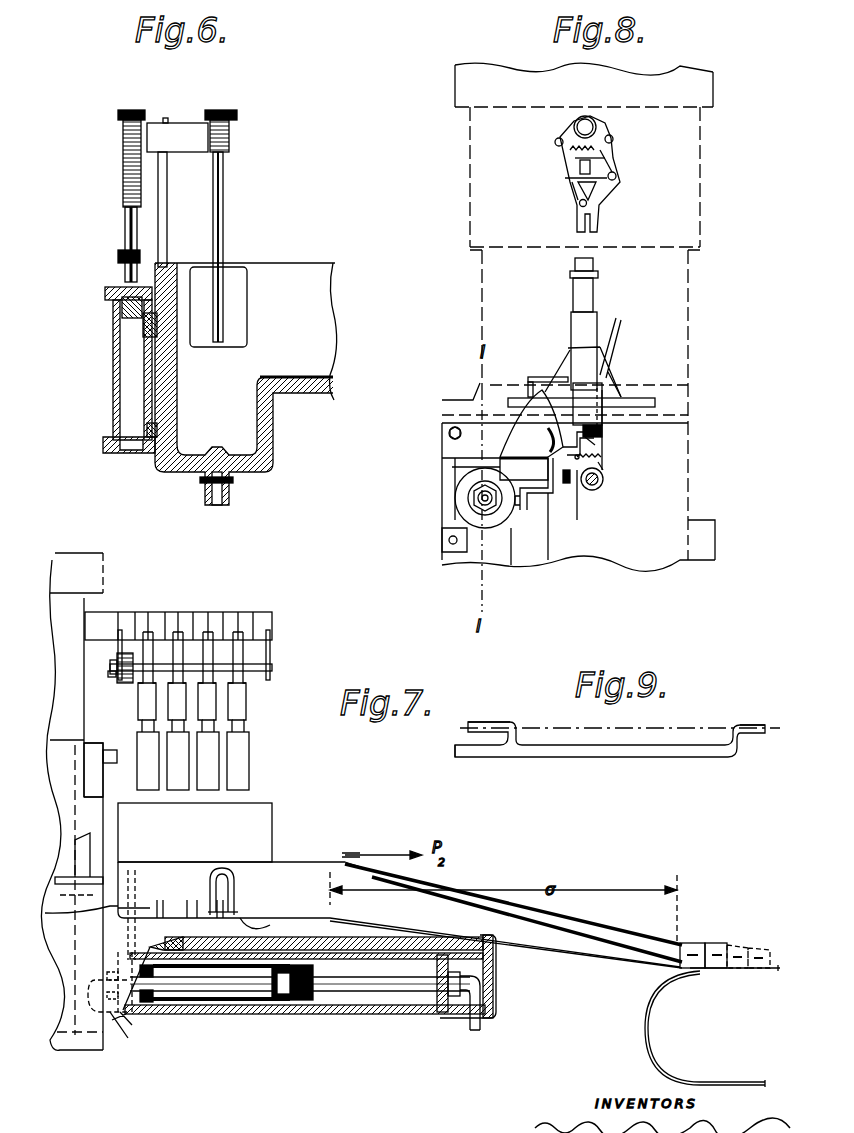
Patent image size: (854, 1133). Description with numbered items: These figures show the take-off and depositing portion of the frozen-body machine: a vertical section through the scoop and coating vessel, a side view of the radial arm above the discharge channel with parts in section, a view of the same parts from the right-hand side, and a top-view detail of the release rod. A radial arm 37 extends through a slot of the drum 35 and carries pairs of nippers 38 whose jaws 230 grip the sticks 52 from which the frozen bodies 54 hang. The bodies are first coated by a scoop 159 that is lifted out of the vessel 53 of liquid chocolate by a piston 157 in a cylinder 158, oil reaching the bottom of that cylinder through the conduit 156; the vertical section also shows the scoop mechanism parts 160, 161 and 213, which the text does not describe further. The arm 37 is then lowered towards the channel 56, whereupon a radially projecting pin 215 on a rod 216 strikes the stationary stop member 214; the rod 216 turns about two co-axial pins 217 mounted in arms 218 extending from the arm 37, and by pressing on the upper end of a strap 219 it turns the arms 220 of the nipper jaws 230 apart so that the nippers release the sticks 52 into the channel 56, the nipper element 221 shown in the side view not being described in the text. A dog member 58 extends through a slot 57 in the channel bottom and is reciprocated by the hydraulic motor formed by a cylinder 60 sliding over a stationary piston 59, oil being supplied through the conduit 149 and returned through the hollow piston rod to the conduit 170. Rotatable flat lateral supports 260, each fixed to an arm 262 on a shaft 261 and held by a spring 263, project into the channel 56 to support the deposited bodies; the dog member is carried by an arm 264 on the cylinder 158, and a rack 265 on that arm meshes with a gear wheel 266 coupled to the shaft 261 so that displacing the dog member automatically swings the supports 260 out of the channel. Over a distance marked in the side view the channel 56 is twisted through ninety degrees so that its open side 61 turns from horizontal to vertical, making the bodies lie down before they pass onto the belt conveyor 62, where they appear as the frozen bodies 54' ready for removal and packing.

In FIG. 8, the drum 35 is at (485, 298).
In FIG. 8, the radial arm 37 is at (585, 125).
In FIG. 7, the radial arm 37 is at (232, 612).
In FIG. 8, the nippers 38 is at (572, 187).
In FIG. 7, the nippers 38 is at (246, 702).
In FIG. 7, the sticks 52 is at (246, 726).
In FIG. 6, the vessel 53 is at (305, 328).
In FIG. 7, the frozen bodies 54 is at (228, 761).
In FIG. 7, the frozen bodies on conveyor 54' is at (730, 941).
In FIG. 8, the channel 56 is at (512, 440).
In FIG. 7, the channel 56 is at (278, 868).
In FIG. 8, the slot 57 is at (600, 446).
In FIG. 8, the dog member 58 is at (605, 433).
In FIG. 7, the dog member 58 is at (110, 907).
In FIG. 7, the piston 59 is at (284, 1003).
In FIG. 8, the cylinder 60 is at (458, 504).
In FIG. 7, the cylinder 60 is at (212, 1003).
In FIG. 7, the open side of the channel 61 is at (598, 925).
In FIG. 7, the belt conveyor 62 is at (652, 1028).
In FIG. 7, the conduit 149 is at (470, 1030).
In FIG. 6, the conduit 156 is at (130, 455).
In FIG. 6, the piston 157 is at (122, 310).
In FIG. 6, the cylinder 158 is at (113, 405).
In FIG. 8, the cylinder 158 is at (511, 528).
In FIG. 7, the cylinder 158 is at (385, 1012).
In FIG. 6, the scoop 159 is at (240, 282).
In FIG. 6, the cross head 160 is at (178, 128).
In FIG. 6, the threaded rod 161 is at (128, 212).
In FIG. 7, the conduit 170 is at (116, 1035).
In FIG. 6, the bottom plate 213 is at (310, 385).
In FIG. 8, the stationary stop member 214 is at (598, 274).
In FIG. 7, the stationary stop member 214 is at (112, 750).
In FIG. 9, the radially projecting pin 215 is at (463, 757).
In FIG. 7, the radially projecting pin 215 is at (113, 678).
In FIG. 8, the rod 216 is at (575, 172).
In FIG. 9, the rod 216 is at (603, 755).
In FIG. 7, the rod 216 is at (228, 672).
In FIG. 8, the co-axial pins 217 is at (614, 180).
In FIG. 9, the co-axial pins 217 is at (478, 727).
In FIG. 7, the co-axial pins 217 is at (110, 670).
In FIG. 6, the arm 218 is at (120, 287).
In FIG. 8, the arm 218 is at (612, 167).
In FIG. 7, the arm 218 is at (118, 647).
In FIG. 8, the strap 219 is at (602, 160).
In FIG. 8, the arm 220 is at (555, 142).
In FIG. 8, the spring 221 is at (568, 150).
In FIG. 8, the jaws 230 is at (572, 192).
In FIG. 8, the lateral supports 260 is at (602, 410).
In FIG. 7, the lateral supports 260 is at (236, 880).
In FIG. 8, the shaft 261 is at (604, 480).
In FIG. 8, the arm 262 is at (603, 455).
In FIG. 7, the arm 262 is at (203, 935).
In FIG. 8, the spring 263 is at (603, 466).
In FIG. 8, the arm 264 is at (548, 520).
In FIG. 8, the rack 265 is at (575, 500).
In FIG. 8, the gear wheel 266 is at (582, 488).